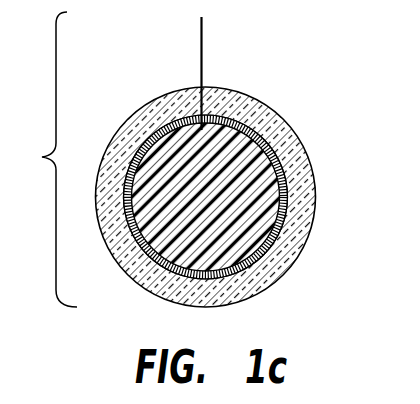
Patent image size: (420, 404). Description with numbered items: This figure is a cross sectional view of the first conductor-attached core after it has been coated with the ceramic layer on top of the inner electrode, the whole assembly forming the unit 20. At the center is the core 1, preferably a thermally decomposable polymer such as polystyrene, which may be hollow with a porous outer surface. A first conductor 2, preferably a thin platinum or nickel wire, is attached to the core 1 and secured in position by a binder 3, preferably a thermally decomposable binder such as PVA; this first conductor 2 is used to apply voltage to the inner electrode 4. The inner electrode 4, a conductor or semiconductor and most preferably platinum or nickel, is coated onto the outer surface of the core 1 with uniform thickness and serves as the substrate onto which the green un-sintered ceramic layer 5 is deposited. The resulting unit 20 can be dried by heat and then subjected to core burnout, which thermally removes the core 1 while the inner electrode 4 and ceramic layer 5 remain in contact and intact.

The core 1 is at (268, 185).
The first conductor 2 is at (203, 60).
The binder 3 is at (211, 112).
The inner electrode 4 is at (167, 130).
The ceramic layer 5 is at (297, 258).
The unit 20 is at (45, 159).